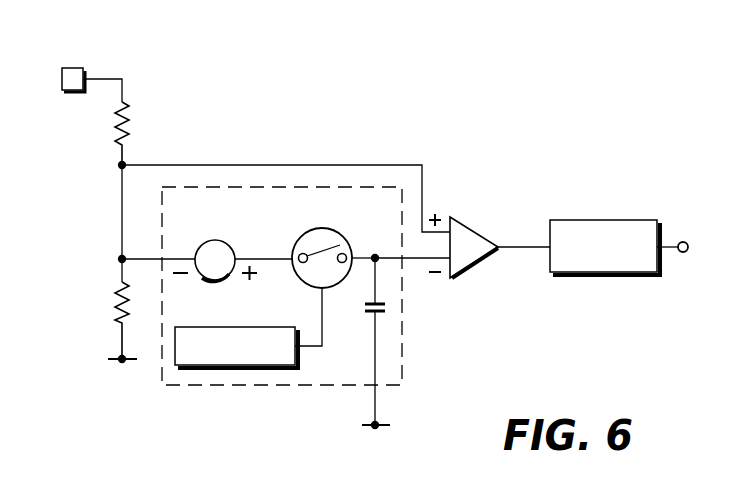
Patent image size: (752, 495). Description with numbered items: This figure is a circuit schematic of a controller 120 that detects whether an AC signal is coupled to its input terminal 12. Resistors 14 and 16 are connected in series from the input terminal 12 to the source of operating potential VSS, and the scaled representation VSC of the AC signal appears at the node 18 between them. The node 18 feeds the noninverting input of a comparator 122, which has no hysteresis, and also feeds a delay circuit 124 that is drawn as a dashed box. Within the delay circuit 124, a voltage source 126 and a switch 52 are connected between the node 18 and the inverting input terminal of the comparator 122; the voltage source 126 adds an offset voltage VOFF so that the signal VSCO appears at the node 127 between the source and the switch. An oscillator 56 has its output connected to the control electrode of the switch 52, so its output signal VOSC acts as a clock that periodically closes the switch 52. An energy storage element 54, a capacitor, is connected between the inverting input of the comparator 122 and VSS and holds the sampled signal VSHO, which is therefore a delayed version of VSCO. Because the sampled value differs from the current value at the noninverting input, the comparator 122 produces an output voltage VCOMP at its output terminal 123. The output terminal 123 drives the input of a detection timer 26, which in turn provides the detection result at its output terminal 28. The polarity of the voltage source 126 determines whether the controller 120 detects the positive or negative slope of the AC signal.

The input terminal 12 is at (73, 68).
The resistor 14 is at (125, 117).
The resistor 16 is at (118, 297).
The node 18 is at (122, 230).
The detection timer 26 is at (607, 220).
The output terminal 28 is at (683, 242).
The switch 52 is at (312, 227).
The energy storage element 54 is at (367, 313).
The oscillator 56 is at (258, 327).
The controller 120 is at (583, 365).
The comparator 122 is at (470, 270).
The output terminal 123 is at (507, 245).
The delay circuit 124 is at (237, 387).
The voltage source 126 is at (213, 240).
The node 127 is at (255, 255).